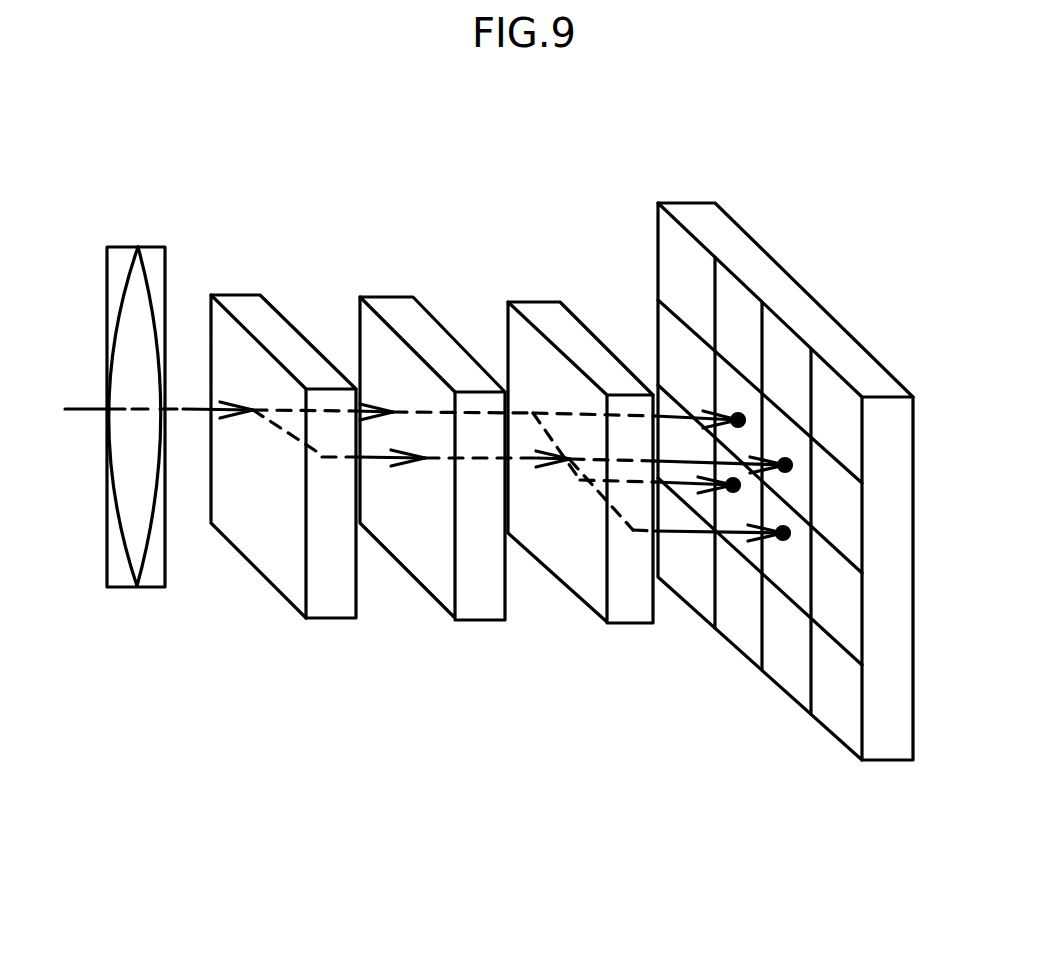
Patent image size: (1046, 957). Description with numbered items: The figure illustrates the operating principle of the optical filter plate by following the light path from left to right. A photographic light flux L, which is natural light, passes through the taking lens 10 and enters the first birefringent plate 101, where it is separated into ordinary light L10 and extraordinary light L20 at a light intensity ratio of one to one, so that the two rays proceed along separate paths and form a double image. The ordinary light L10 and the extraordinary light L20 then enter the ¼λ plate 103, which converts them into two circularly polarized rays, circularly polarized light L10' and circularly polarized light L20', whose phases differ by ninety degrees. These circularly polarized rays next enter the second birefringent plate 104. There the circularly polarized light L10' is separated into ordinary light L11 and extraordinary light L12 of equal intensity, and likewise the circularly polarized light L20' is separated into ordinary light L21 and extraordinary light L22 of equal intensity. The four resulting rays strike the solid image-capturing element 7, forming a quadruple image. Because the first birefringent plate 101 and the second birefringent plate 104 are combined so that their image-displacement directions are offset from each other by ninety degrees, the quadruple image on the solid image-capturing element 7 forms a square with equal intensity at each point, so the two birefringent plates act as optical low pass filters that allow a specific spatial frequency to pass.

The taking lens 10 is at (137, 247).
The first birefringent plate 101 is at (242, 293).
The ¼λ plate 103 is at (393, 297).
The second birefringent plate 104 is at (550, 300).
The solid image-capturing element 7 is at (808, 290).
The photographic light flux L is at (212, 405).
The ordinary light L10 is at (393, 326).
The circularly polarized light L10' is at (504, 357).
The ordinary light L11 is at (726, 415).
The extraordinary light L12 is at (690, 487).
The extraordinary light L20 is at (395, 559).
The circularly polarized light L20' is at (582, 579).
The ordinary light L21 is at (750, 475).
The extraordinary light L22 is at (766, 537).